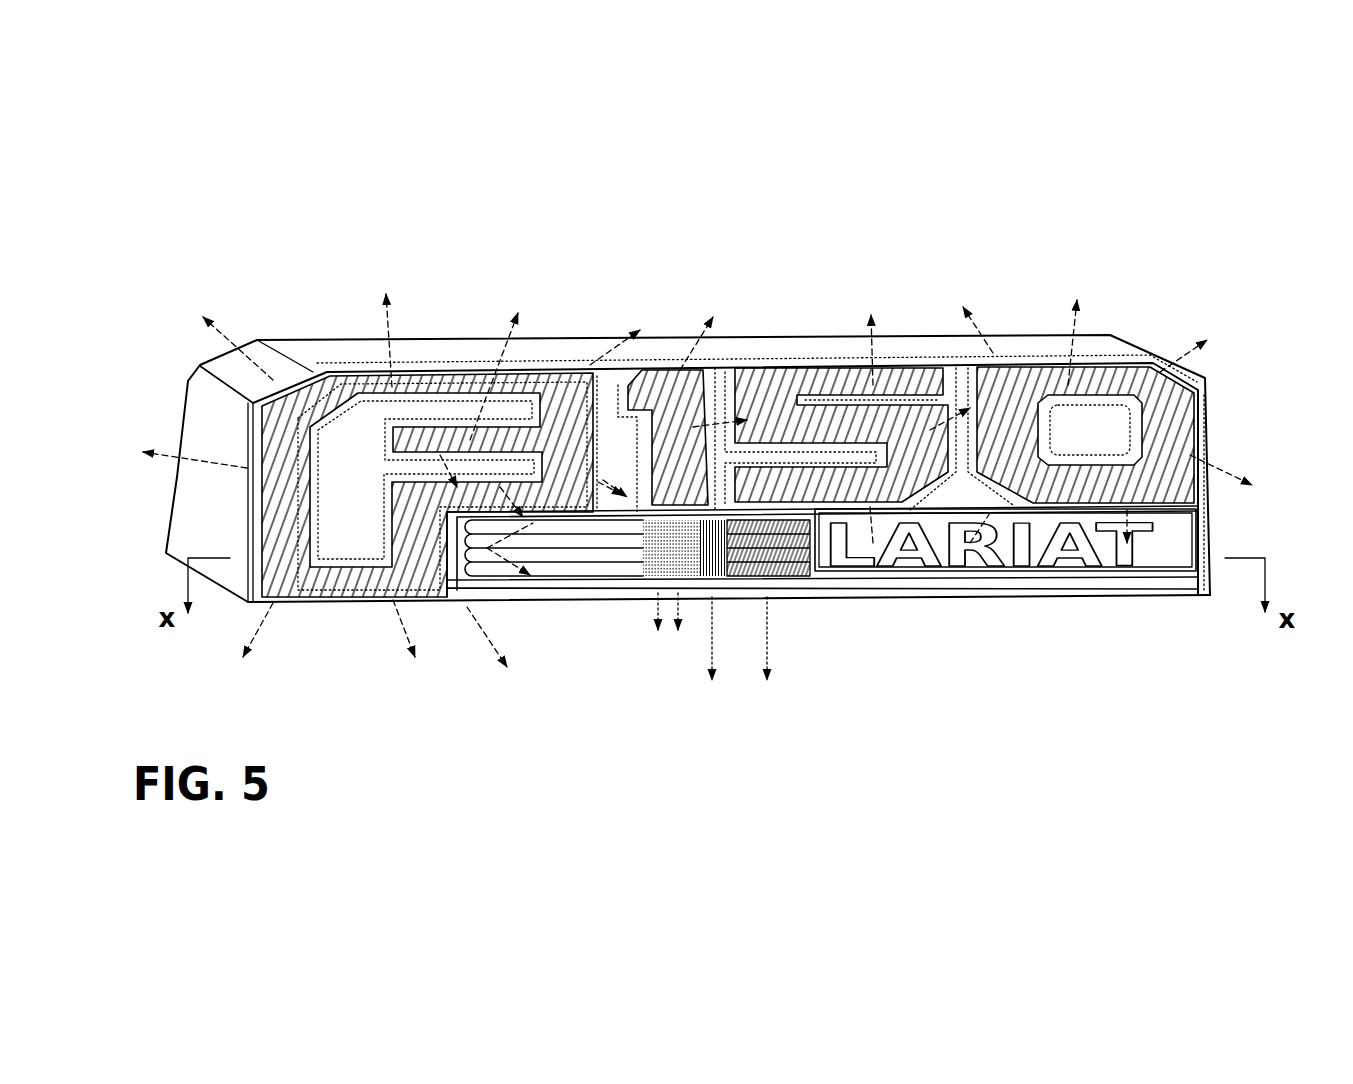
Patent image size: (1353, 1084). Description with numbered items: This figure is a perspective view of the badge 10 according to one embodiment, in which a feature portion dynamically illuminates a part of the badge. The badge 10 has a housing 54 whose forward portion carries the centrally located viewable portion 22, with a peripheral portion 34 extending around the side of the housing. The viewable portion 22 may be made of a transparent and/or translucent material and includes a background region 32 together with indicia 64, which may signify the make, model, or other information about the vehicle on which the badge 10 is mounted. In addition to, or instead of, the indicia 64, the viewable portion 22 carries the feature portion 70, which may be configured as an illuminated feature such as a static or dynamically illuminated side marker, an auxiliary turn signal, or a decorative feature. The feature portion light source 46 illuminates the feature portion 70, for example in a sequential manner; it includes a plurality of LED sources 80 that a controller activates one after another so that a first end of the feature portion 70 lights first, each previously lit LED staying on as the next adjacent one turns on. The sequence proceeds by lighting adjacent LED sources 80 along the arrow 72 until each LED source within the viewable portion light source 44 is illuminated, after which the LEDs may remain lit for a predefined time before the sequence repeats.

The badge 10 is at (438, 297).
The viewable portion 22 is at (373, 388).
The indicia 64 is at (460, 403).
The housing 54 is at (213, 355).
The peripheral portion 34 is at (210, 428).
The viewable portion light source 44 is at (1033, 380).
The background region 32 is at (338, 573).
The arrow 72 is at (547, 570).
The feature portion 70 is at (582, 570).
The LED sources 80 is at (650, 566).
The feature portion light source 46 is at (743, 568).